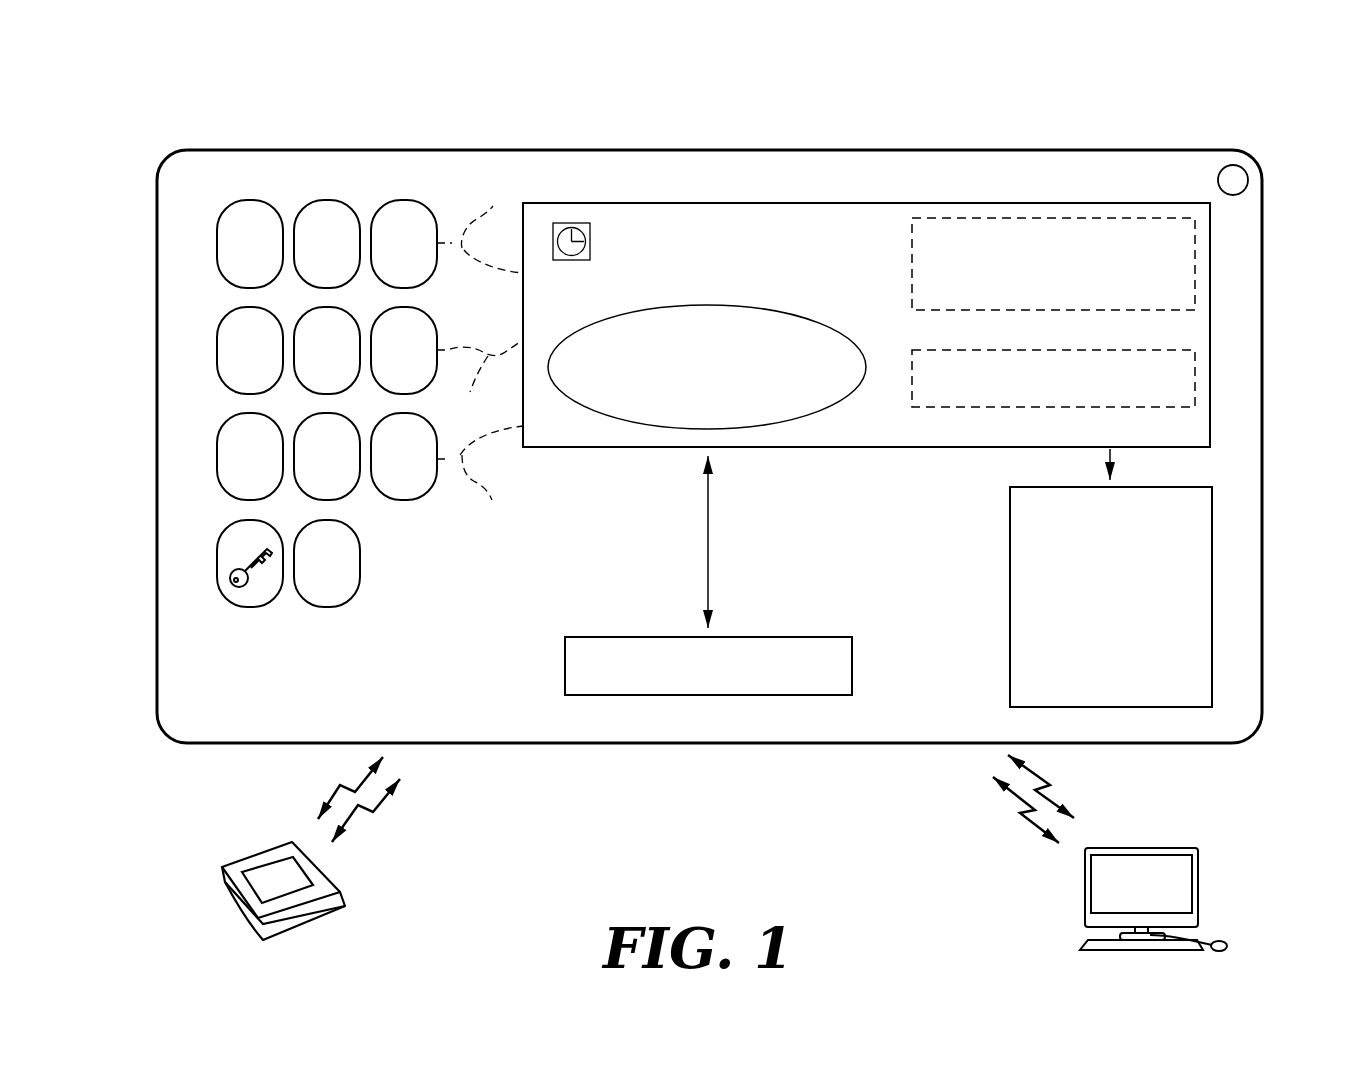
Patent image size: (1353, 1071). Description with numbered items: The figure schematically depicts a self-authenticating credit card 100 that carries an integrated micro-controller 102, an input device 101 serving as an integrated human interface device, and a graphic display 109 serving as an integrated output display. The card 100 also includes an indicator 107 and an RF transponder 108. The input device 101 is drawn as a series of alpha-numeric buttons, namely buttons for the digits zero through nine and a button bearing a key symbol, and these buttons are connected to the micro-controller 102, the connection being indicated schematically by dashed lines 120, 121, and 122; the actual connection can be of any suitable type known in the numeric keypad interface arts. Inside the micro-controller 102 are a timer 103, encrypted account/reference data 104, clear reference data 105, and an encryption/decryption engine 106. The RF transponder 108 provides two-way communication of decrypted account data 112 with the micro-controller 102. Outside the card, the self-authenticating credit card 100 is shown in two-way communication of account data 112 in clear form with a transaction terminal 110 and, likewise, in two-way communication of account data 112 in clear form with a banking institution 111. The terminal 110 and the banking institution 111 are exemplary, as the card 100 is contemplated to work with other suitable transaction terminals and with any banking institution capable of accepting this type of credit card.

The self-authenticating credit card 100 is at (583, 151).
The input device 101 is at (198, 216).
The micro-controller 102 is at (908, 203).
The timer 103 is at (580, 223).
The encrypted account/reference data 104 is at (1195, 245).
The clear reference data 105 is at (1195, 378).
The encryption/decryption engine 106 is at (712, 305).
The indicator 107 is at (1243, 167).
The RF transponder 108 is at (828, 637).
The graphic display 109 is at (1078, 671).
The transaction terminal 110 is at (222, 872).
The banking institution 111 is at (1199, 872).
The account data 112 is at (706, 541).
The dashed line 120 is at (481, 218).
The dashed line 121 is at (477, 381).
The dashed line 122 is at (481, 483).